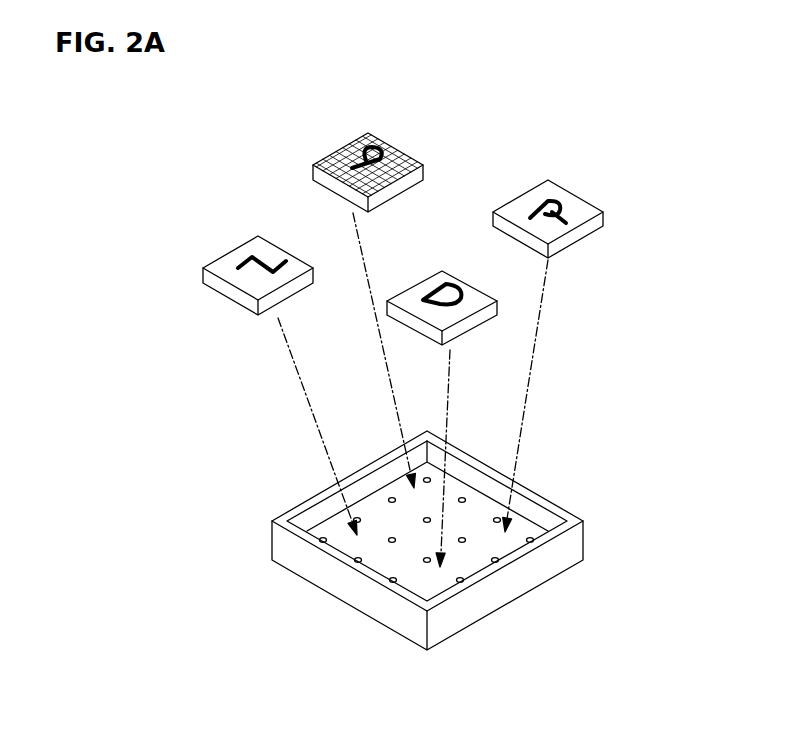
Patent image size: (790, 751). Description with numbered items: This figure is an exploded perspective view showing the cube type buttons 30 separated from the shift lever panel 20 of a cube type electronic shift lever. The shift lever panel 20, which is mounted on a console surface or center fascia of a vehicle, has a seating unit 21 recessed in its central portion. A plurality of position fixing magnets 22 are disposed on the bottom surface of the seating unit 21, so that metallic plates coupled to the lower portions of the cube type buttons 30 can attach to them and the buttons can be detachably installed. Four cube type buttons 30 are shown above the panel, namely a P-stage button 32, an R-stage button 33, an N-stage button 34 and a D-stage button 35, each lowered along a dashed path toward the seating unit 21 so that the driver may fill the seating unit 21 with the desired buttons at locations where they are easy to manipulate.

The shift lever panel 20 is at (464, 531).
The seating unit 21 is at (427, 528).
The position fixing magnets 22 is at (462, 497).
The cube type buttons 30 is at (384, 331).
The P-stage button 32 is at (400, 148).
The R-stage button 33 is at (570, 197).
The N-stage button 34 is at (228, 258).
The D-stage button 35 is at (440, 272).